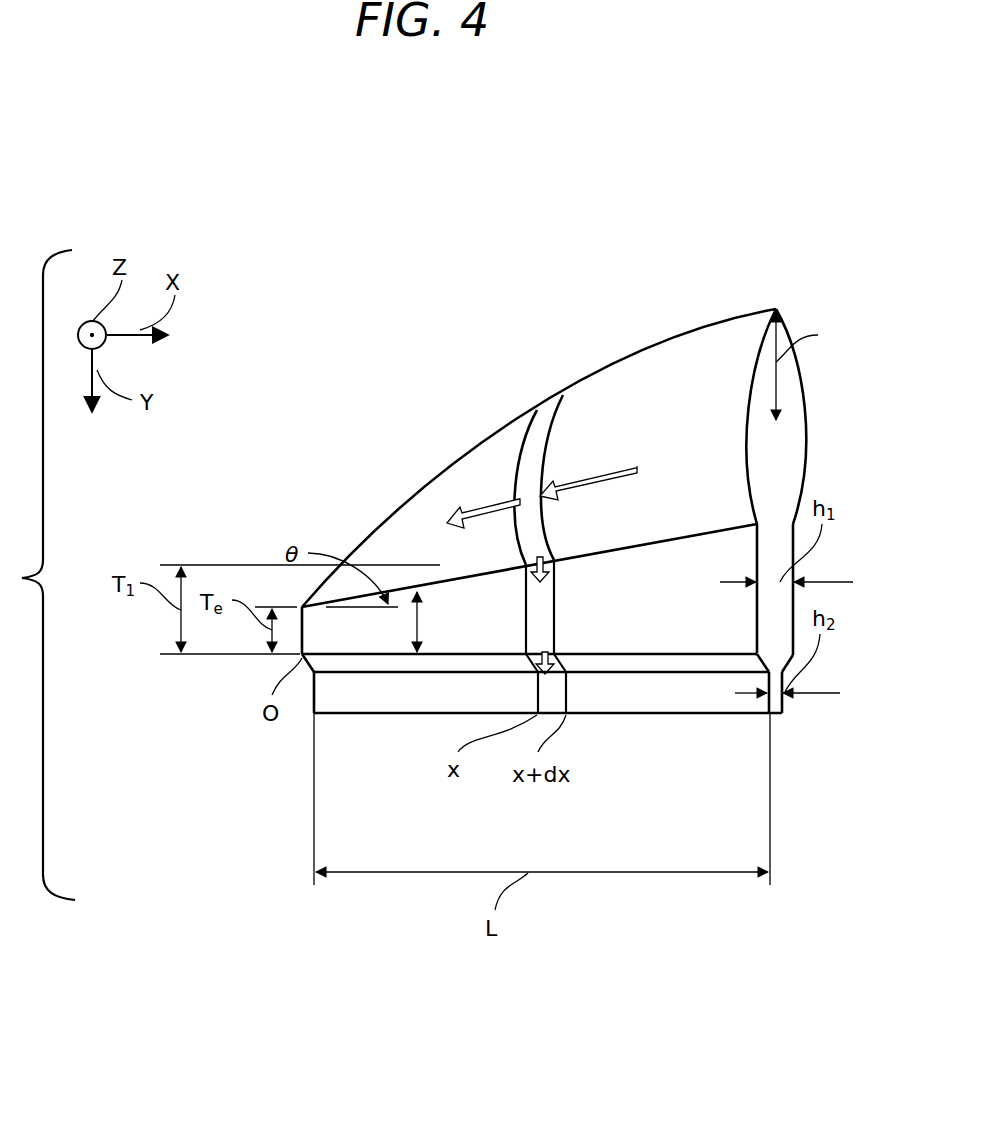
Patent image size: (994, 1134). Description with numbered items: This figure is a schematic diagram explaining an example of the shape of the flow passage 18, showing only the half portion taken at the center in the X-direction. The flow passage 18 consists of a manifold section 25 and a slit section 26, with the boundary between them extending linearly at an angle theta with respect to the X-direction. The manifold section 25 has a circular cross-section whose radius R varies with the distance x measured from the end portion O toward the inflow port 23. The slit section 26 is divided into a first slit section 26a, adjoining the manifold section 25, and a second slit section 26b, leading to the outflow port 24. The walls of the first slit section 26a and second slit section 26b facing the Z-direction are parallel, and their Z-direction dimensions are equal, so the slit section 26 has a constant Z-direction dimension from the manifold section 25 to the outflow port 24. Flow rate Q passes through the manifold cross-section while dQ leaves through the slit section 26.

The flow passage 18 is at (370, 355).
The inflow port 23 is at (790, 312).
The outflow port 24 is at (778, 716).
The manifold section 25 is at (642, 372).
The slit section 26 is at (745, 808).
The first slit section 26a is at (585, 700).
The second slit section 26b is at (612, 628).